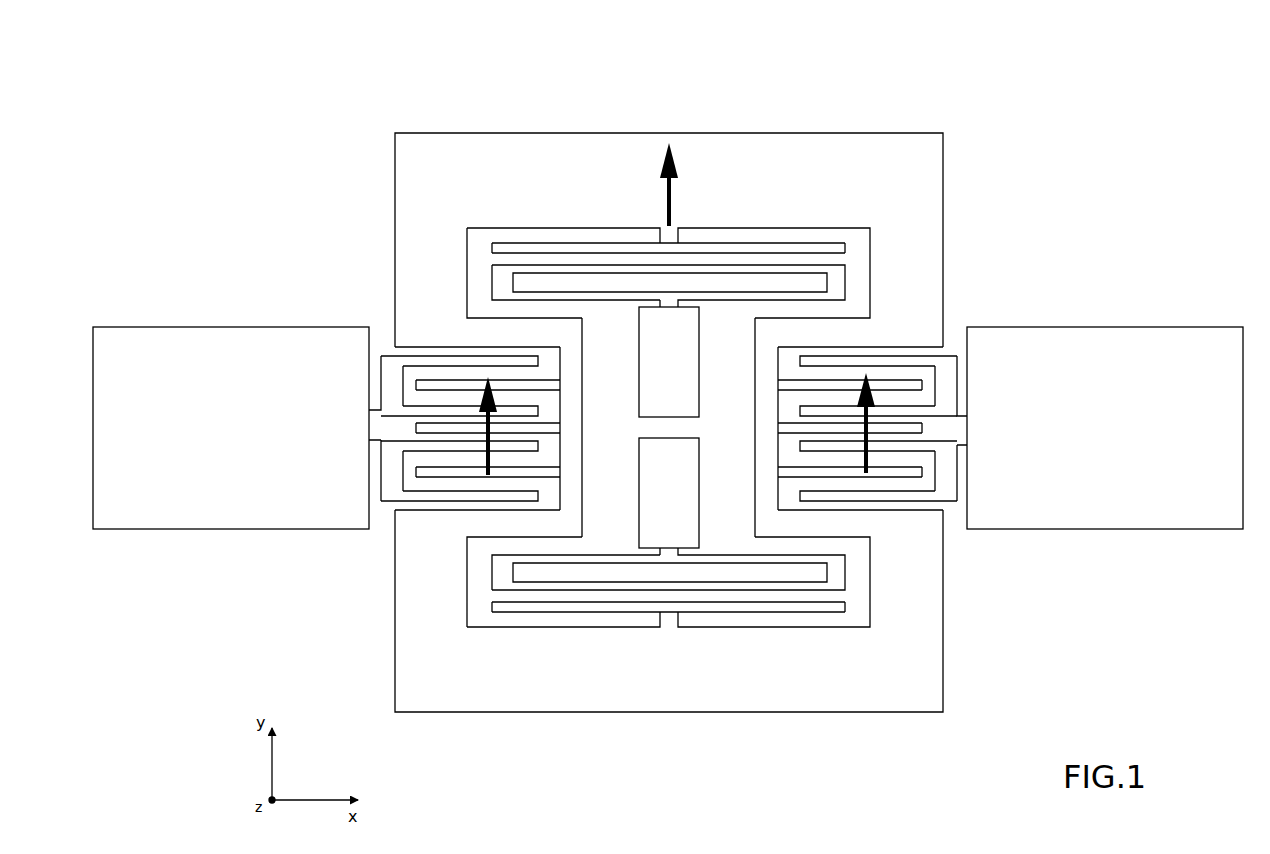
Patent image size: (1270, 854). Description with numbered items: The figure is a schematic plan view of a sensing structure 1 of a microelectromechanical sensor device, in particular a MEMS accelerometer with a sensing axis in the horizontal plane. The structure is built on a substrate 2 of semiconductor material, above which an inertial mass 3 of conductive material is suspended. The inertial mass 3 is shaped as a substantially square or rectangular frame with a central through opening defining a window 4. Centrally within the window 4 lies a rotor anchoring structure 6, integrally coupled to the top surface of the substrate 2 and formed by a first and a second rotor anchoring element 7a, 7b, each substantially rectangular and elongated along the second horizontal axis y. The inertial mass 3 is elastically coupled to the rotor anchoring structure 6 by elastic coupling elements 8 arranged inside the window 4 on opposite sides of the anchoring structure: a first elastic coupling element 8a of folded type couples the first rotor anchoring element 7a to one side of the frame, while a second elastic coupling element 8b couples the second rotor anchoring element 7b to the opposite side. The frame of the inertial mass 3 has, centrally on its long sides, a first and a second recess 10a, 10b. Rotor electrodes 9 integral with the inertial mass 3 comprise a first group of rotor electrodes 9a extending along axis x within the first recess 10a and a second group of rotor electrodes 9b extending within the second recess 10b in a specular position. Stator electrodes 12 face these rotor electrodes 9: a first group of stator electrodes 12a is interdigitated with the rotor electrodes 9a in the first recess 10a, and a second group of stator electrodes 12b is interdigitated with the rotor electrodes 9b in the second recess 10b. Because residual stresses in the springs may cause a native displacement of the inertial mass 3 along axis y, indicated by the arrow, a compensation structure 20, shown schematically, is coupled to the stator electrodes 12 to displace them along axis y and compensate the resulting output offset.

The sensing structure 1 is at (960, 160).
The substrate 2 is at (732, 397).
The inertial mass 3 is at (818, 150).
The window 4 is at (858, 288).
The rotor anchoring structure 6 is at (627, 530).
The first rotor anchoring element 7a is at (647, 380).
The second rotor anchoring element 7b is at (648, 515).
The elastic coupling elements 8 is at (548, 238).
The first elastic coupling element 8a is at (712, 243).
The second elastic coupling element 8b is at (735, 612).
The rotor electrodes 9 is at (480, 345).
The first group of rotor electrodes 9a is at (430, 422).
The second group of rotor electrodes 9b is at (877, 428).
The first recess 10a is at (412, 500).
The second recess 10b is at (922, 350).
The stator electrodes 12 is at (463, 370).
The first group of stator electrodes 12a is at (472, 490).
The second group of stator electrodes 12b is at (927, 455).
The compensation structure 20 is at (222, 325).